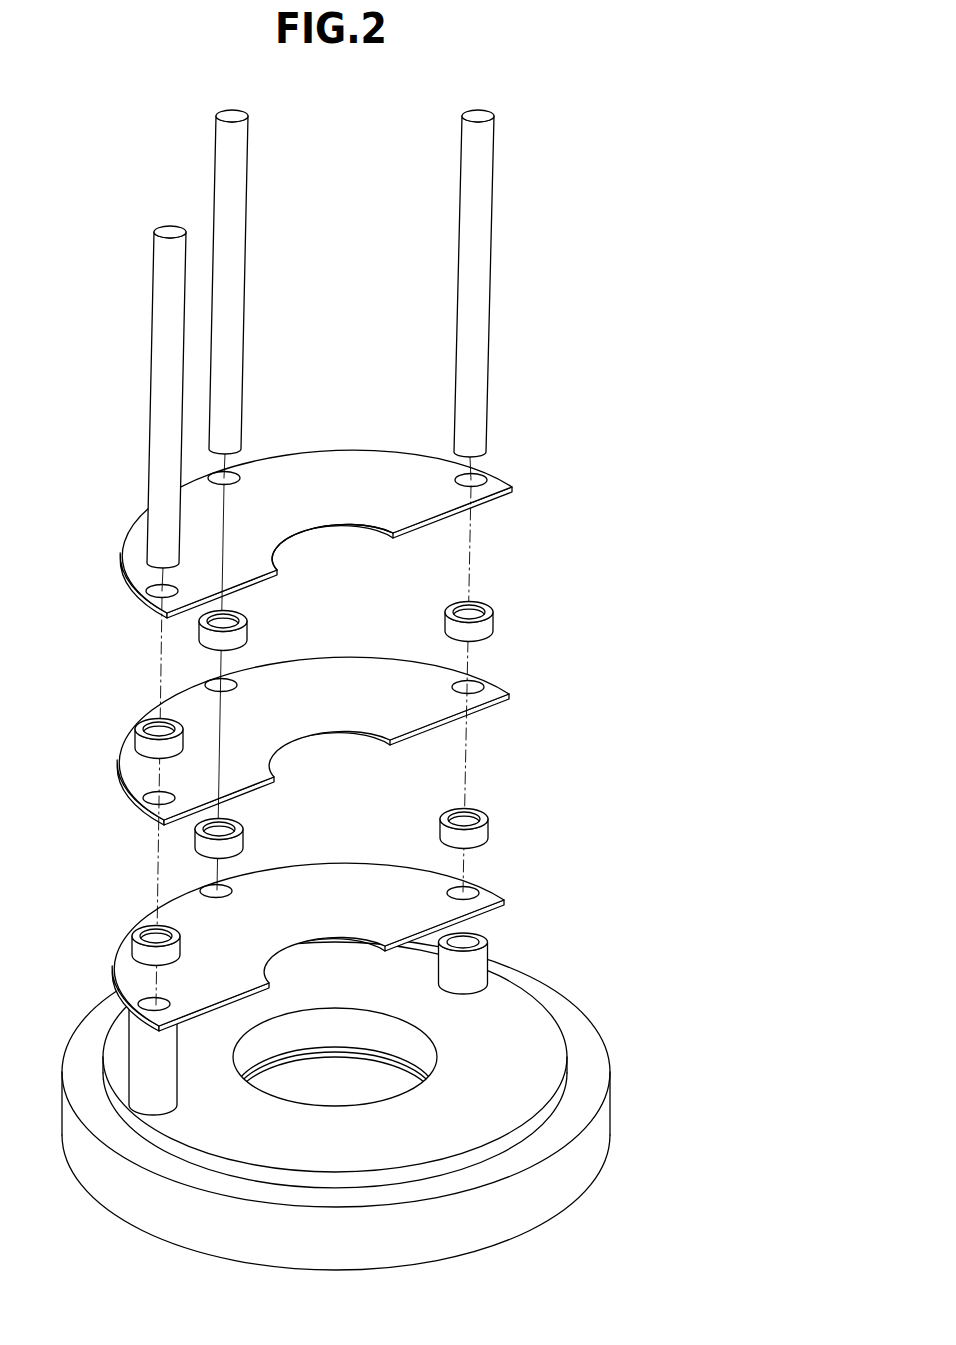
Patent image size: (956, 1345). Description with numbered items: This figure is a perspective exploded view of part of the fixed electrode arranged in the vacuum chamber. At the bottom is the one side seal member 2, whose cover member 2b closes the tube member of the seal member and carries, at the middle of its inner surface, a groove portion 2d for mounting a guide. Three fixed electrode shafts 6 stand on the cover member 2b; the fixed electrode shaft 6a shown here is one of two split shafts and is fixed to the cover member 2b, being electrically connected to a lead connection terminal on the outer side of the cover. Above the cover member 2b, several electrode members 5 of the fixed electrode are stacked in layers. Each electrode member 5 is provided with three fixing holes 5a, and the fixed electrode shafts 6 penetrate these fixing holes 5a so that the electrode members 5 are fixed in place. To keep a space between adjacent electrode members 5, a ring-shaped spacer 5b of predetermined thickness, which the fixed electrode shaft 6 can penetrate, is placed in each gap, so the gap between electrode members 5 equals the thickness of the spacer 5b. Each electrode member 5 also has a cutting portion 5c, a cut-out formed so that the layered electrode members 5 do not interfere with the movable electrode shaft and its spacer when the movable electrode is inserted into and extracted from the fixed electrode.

The one side seal member 2 is at (336, 1103).
The cover member 2b is at (512, 1010).
The groove portion 2d is at (380, 1080).
The electrode member 5 is at (347, 724).
The fixing hole 5a is at (480, 473).
The ring-shaped spacer 5b is at (472, 944).
The cutting portion 5c is at (330, 552).
The fixed electrode shaft 6 is at (379, 339).
The fixed electrode shaft 6a is at (493, 226).